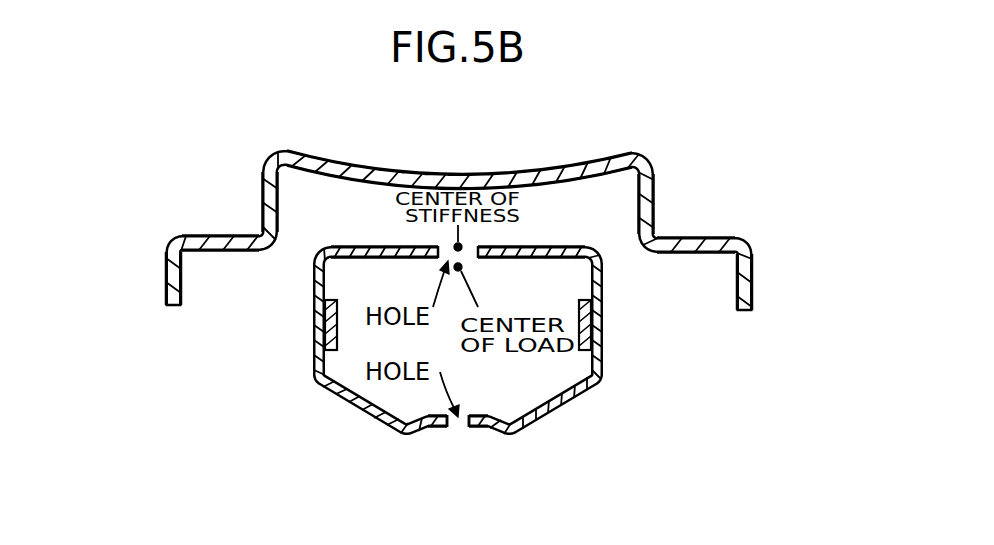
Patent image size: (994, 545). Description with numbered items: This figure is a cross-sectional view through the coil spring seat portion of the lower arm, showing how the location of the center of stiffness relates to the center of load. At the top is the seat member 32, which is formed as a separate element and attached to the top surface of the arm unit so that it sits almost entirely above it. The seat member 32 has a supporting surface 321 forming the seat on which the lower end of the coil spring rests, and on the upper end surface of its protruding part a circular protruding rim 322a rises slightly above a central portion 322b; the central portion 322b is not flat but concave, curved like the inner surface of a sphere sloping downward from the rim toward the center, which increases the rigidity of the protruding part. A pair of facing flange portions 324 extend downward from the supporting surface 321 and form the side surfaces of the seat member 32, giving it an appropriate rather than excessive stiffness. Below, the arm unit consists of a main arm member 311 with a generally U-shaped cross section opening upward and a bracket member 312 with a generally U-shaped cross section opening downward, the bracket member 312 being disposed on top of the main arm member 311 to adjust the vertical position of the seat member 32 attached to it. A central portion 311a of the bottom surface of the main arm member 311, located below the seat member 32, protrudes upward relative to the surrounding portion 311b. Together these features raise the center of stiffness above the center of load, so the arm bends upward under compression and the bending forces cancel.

The seat member 32 is at (654, 138).
The supporting surface 321 is at (205, 236).
The protruding rim 322a is at (290, 150).
The central portion 322b is at (470, 175).
The flange portions 324 is at (166, 281).
The main arm member 311 is at (333, 398).
The central portion 311a is at (480, 426).
The surrounding portion 311b is at (405, 437).
The bracket member 312 is at (338, 246).